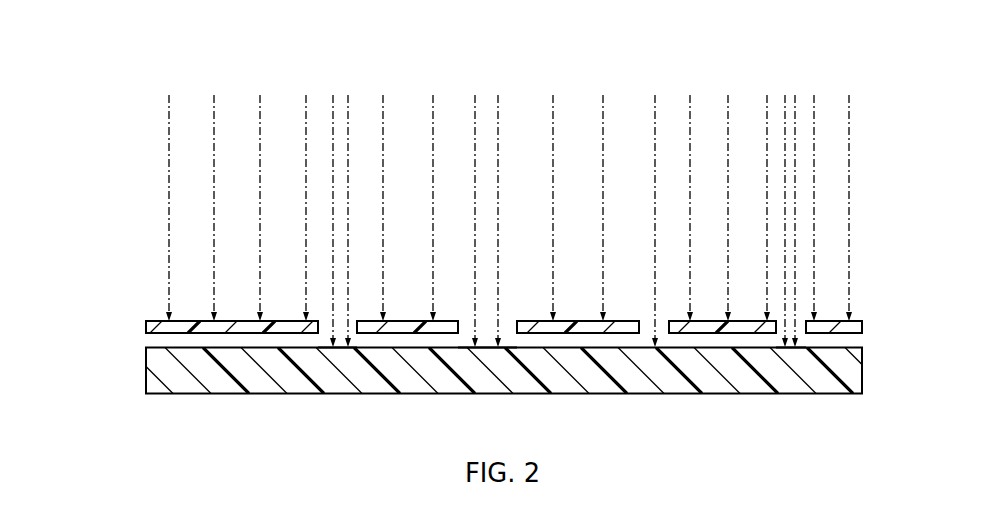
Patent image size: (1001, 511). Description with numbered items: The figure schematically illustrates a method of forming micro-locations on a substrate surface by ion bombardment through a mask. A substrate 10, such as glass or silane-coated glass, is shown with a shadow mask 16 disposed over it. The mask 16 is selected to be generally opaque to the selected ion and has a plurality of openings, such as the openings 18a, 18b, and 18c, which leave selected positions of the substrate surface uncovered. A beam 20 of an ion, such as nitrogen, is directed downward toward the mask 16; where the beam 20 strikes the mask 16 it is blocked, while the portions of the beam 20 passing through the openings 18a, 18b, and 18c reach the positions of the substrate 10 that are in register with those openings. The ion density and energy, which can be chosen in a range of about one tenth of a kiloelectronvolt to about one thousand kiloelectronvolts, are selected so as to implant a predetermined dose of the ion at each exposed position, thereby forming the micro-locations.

The substrate 10 is at (146, 369).
The shadow mask 16 is at (146, 326).
The opening 18a is at (340, 327).
The opening 18b is at (488, 327).
The opening 18c is at (793, 326).
The ion beam 20 is at (333, 100).